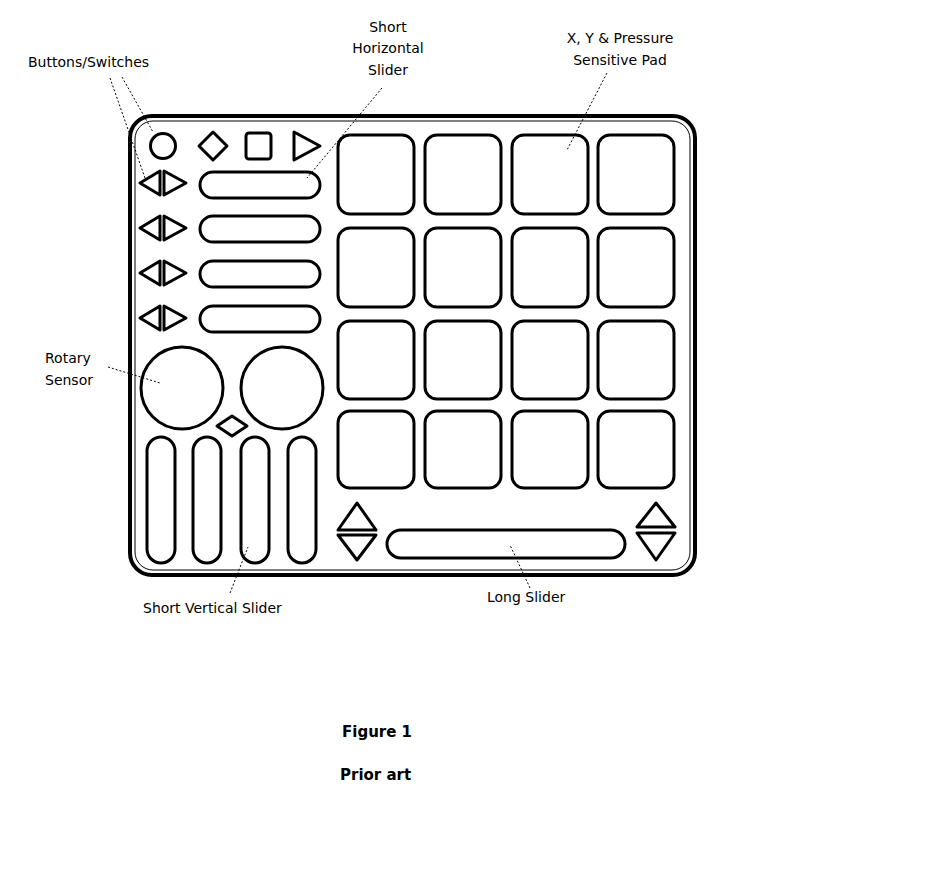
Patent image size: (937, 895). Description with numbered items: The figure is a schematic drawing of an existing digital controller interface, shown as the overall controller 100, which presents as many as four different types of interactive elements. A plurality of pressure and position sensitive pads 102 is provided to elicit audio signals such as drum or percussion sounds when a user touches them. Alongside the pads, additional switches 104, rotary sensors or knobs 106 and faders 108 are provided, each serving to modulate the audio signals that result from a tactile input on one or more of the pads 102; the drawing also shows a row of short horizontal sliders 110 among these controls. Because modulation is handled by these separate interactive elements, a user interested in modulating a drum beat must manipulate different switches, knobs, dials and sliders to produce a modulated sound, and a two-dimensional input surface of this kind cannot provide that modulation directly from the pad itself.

The control surface / input device 100 is at (723, 121).
The pressure and position sensitive pads 102 is at (540, 288).
The switches 104 is at (402, 338).
The rotary sensors or knobs 106 is at (189, 399).
The faders 108 is at (185, 502).
The short horizontal slider 110 is at (260, 264).